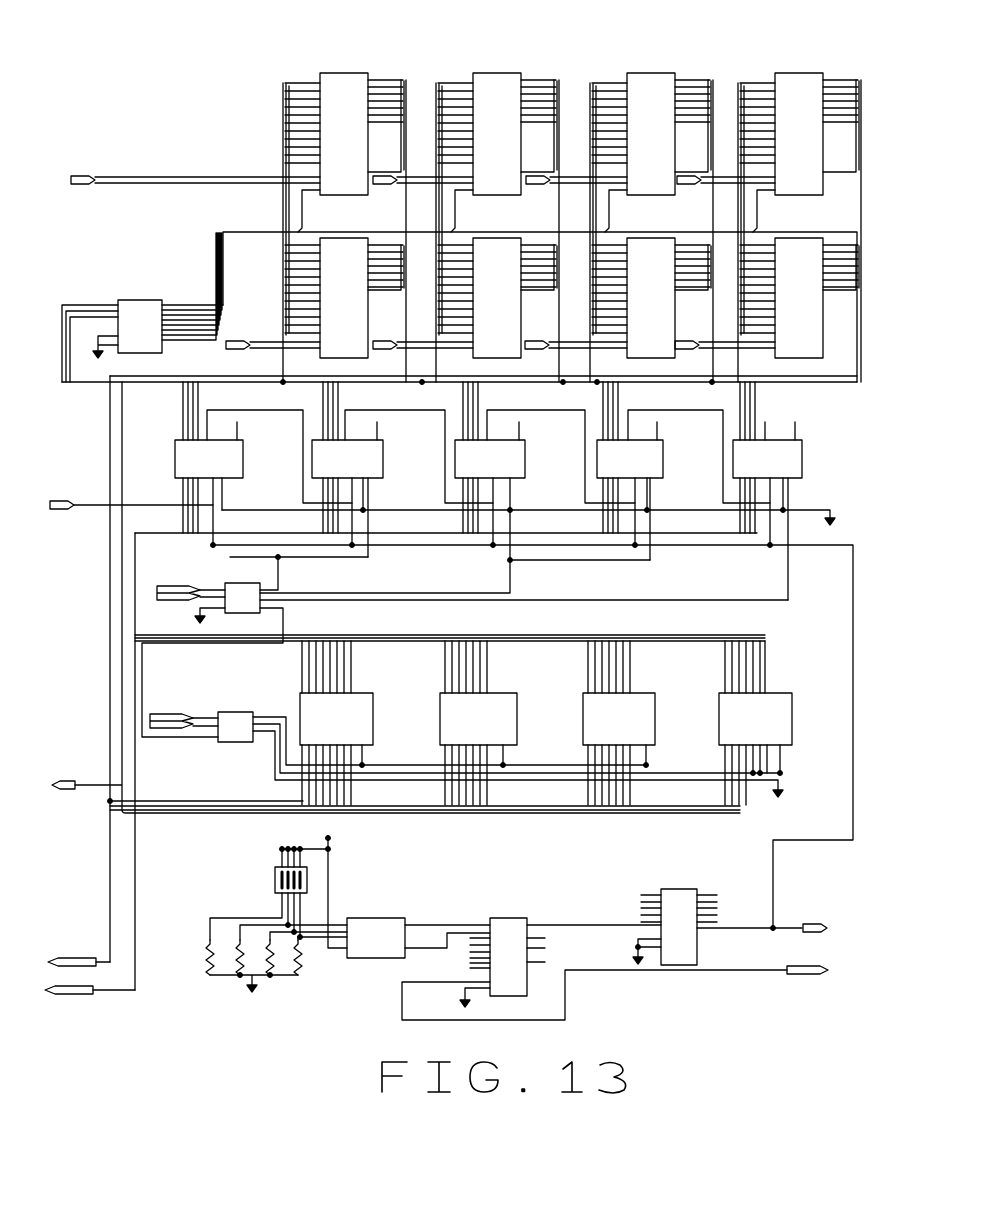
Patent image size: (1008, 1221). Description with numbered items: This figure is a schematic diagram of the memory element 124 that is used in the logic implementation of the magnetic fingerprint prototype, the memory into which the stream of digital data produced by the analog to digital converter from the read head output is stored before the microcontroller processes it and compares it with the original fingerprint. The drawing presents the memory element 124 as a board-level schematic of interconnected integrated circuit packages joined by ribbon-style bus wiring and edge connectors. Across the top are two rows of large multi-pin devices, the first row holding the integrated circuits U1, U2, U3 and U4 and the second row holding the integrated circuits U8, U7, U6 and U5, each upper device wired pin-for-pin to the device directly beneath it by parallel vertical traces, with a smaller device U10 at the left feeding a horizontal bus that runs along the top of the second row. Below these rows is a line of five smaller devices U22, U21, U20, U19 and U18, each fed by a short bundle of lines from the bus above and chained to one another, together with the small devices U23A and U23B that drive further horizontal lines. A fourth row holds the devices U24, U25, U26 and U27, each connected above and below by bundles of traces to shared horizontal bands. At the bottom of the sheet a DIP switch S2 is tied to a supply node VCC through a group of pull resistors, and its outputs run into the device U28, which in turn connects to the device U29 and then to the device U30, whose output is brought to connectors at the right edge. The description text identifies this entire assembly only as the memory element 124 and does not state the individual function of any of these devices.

The memory element 124 is at (236, 160).
The integrated circuit U1 is at (344, 215).
The integrated circuit U2 is at (497, 215).
The integrated circuit U3 is at (651, 215).
The integrated circuit U4 is at (799, 215).
The integrated circuit U5 is at (799, 284).
The integrated circuit U6 is at (651, 284).
The integrated circuit U7 is at (497, 284).
The integrated circuit U8 is at (344, 284).
The integrated circuit U10 is at (142, 307).
The integrated circuit U18 is at (767, 491).
The integrated circuit U19 is at (630, 471).
The integrated circuit U20 is at (490, 471).
The integrated circuit U21 is at (347, 469).
The integrated circuit U22 is at (209, 463).
The integrated circuit U23A is at (465, 647).
The integrated circuit U23B is at (466, 741).
The integrated circuit U24 is at (336, 723).
The integrated circuit U25 is at (478, 723).
The integrated circuit U26 is at (619, 723).
The integrated circuit U27 is at (755, 723).
The integrated circuit U28 is at (418, 938).
The integrated circuit U29 is at (594, 957).
The integrated circuit U30 is at (717, 914).
The DIP switch S2 is at (276, 919).
The supply voltage node VCC is at (329, 887).